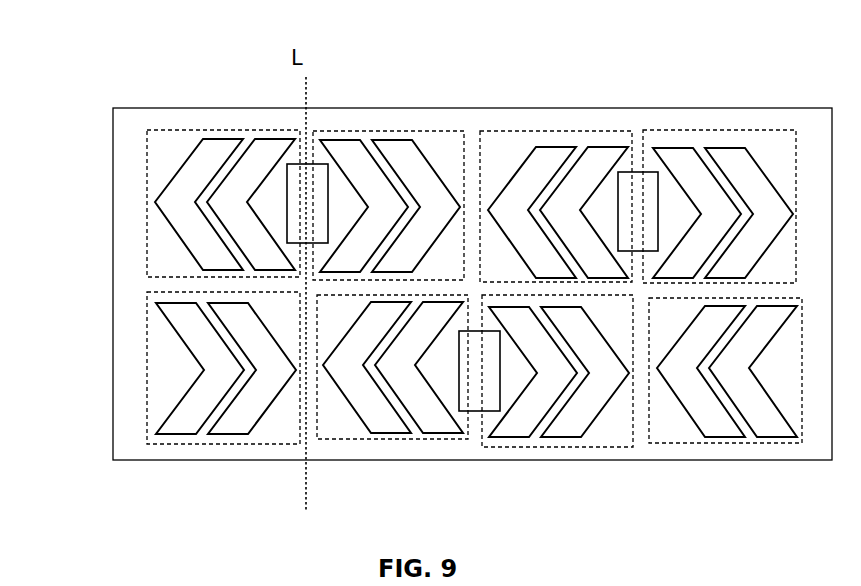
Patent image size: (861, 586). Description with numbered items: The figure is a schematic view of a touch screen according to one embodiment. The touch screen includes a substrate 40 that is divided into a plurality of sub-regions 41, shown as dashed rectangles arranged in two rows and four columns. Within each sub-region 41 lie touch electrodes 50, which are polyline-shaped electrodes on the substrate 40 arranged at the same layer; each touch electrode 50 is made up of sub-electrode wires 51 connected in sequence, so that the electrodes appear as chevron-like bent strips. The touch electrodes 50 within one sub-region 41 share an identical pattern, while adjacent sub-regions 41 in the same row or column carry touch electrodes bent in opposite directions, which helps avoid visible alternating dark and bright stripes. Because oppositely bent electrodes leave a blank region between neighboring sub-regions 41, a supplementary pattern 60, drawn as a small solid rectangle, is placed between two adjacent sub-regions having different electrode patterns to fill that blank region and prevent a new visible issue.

The substrate 40 is at (127, 123).
The sub-region 41 is at (200, 130).
The touch electrode 50 is at (228, 435).
The sub-electrode wire 51 is at (177, 232).
The supplementary pattern 60 is at (477, 411).